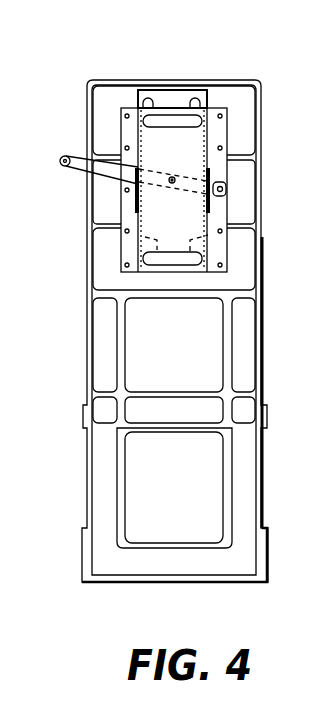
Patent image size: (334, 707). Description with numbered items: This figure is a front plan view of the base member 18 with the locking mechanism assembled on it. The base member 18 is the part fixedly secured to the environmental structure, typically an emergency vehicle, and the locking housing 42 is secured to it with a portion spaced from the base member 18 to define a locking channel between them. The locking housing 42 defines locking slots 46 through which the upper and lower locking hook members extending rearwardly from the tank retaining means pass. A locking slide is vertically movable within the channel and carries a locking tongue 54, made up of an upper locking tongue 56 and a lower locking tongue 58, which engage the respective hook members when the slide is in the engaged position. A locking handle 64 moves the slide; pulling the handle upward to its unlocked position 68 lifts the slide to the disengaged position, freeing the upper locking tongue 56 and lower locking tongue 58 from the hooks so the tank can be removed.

The base member 18 is at (255, 123).
The locking housing 42 is at (217, 127).
The locking slots 46 is at (163, 118).
The locking tongue 54 is at (182, 109).
The upper locking tongue 56 is at (158, 109).
The lower locking tongue 58 is at (145, 237).
The locking handle 64 is at (60, 160).
The unlocked position 68 is at (225, 186).